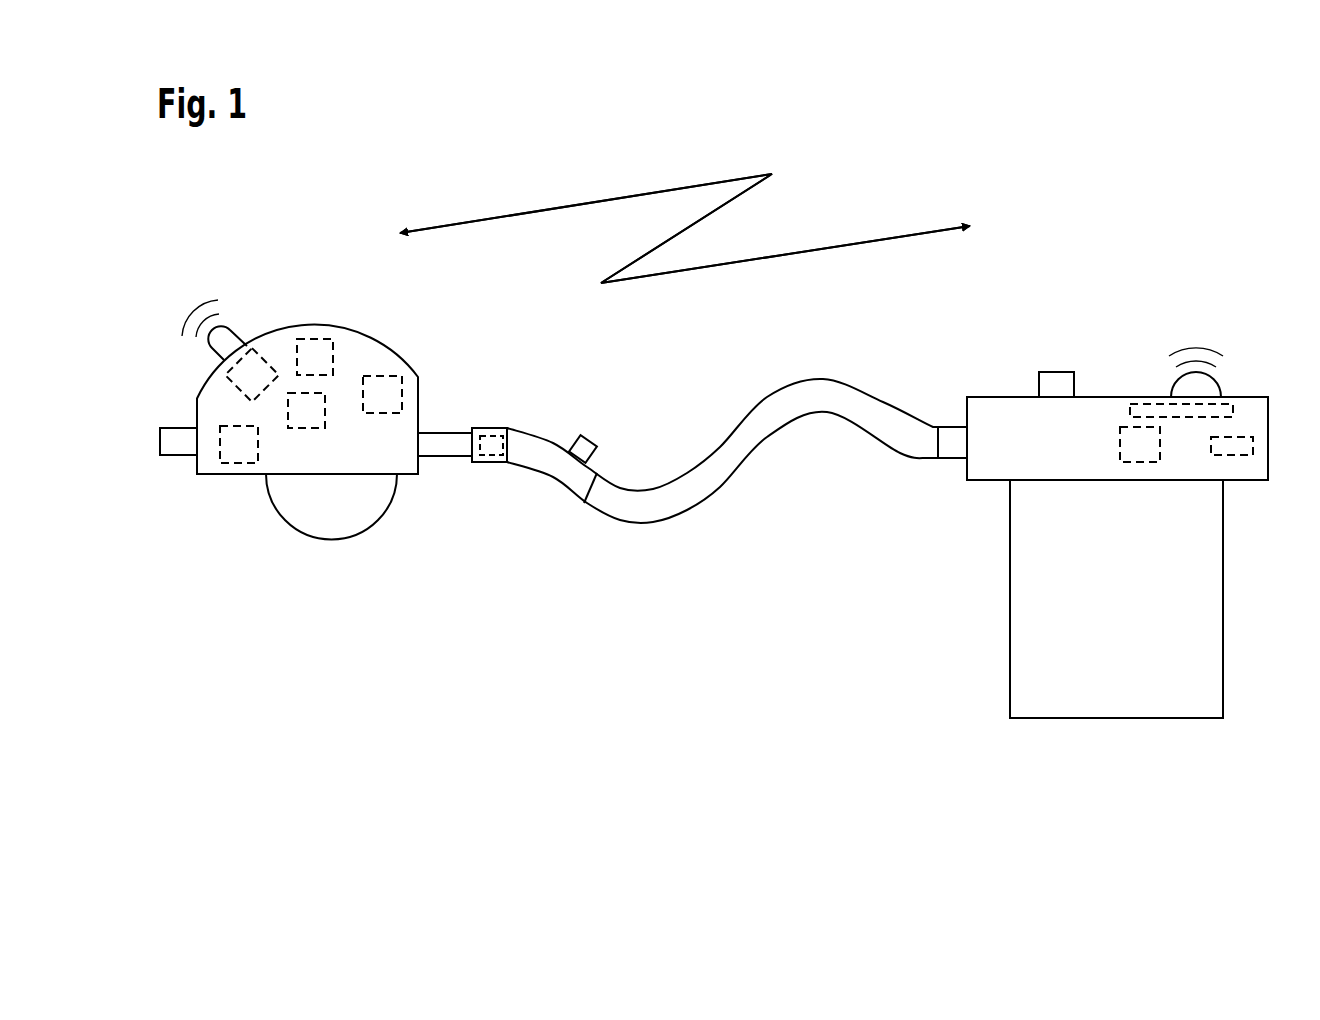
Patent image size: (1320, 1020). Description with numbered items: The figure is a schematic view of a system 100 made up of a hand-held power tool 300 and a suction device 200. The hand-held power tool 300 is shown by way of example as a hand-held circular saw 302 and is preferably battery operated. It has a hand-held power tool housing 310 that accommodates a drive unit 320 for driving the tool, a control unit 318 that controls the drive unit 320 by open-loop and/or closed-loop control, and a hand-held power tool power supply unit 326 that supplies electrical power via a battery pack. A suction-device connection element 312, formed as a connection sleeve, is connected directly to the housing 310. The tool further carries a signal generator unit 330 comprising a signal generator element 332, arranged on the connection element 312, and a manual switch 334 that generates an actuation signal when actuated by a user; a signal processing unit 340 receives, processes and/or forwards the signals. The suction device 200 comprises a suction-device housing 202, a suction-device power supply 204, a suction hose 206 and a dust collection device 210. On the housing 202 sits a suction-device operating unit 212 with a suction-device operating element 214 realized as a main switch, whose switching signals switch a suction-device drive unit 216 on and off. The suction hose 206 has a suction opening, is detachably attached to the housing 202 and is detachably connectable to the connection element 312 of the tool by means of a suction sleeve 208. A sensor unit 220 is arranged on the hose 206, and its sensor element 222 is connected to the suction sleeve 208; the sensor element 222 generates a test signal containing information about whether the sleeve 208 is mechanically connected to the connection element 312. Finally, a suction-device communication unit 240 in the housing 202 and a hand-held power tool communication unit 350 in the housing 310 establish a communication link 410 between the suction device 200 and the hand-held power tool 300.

The system 100 is at (366, 186).
The communication link 410 is at (517, 213).
The suction device 200 is at (1036, 246).
The suction-device housing 202 is at (998, 403).
The suction-device power supply 204 is at (1232, 455).
The suction hose 206 is at (752, 447).
The suction sleeve 208 is at (537, 455).
The dust collection device 210 is at (1107, 705).
The suction-device operating unit 212 is at (1069, 362).
The suction-device operating element 214 is at (1058, 380).
The suction-device drive unit 216 is at (1137, 462).
The sensor unit 220 is at (603, 434).
The sensor element 222 is at (586, 440).
The suction-device communication unit 240 is at (1142, 403).
The hand-held power tool 300 is at (272, 470).
The hand-held circular saw 302 is at (221, 555).
The hand-held power tool housing 310 is at (352, 355).
The suction-device connection element 312 is at (444, 456).
The control unit 318 is at (313, 339).
The drive unit 320 is at (307, 430).
The hand-held power tool power supply unit 326 is at (382, 376).
The signal generator unit 330 is at (494, 472).
The signal generator element 332 is at (498, 428).
The manual switch 334 is at (177, 455).
The signal processing unit 340 is at (240, 425).
The hand-held power tool communication unit 350 is at (268, 360).